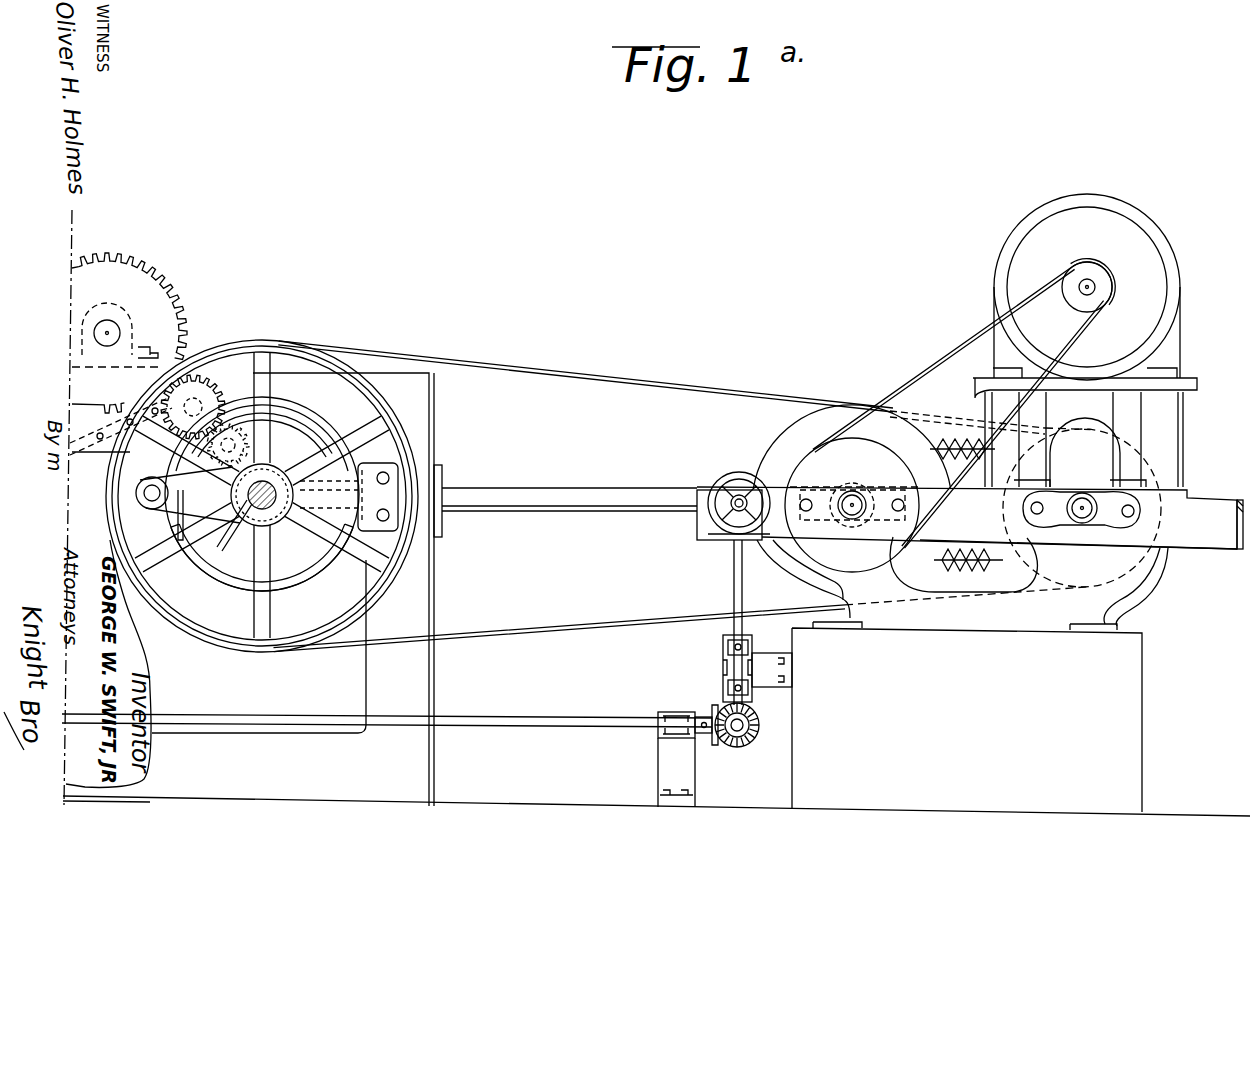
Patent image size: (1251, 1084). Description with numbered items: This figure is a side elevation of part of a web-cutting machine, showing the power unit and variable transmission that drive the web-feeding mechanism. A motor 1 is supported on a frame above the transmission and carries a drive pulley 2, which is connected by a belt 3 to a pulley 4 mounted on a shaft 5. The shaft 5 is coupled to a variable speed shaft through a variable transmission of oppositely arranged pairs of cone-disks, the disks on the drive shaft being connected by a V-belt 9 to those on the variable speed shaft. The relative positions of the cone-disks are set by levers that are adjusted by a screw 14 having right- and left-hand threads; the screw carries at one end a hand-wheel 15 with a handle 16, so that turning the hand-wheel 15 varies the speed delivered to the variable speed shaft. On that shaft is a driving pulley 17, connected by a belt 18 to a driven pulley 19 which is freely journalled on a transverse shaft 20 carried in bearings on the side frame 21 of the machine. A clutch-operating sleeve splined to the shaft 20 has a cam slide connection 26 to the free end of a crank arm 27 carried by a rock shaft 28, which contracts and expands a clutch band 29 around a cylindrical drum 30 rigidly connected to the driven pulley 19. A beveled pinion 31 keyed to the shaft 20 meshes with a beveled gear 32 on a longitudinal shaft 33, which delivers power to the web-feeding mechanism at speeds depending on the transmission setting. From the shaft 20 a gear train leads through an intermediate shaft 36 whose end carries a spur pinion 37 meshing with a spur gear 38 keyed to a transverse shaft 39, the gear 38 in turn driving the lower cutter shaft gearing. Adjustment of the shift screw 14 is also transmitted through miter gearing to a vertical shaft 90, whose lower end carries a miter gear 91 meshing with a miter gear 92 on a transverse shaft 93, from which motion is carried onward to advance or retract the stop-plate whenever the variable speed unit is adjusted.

The motor 1 is at (1127, 240).
The drive pulley 2 is at (1076, 307).
The belt 3 is at (923, 370).
The pulley 4 is at (868, 456).
The shaft 5 is at (837, 488).
The V-belt 9 is at (958, 578).
The screw 14 is at (737, 497).
The hand-wheel 15 is at (730, 533).
The handle 16 is at (695, 530).
The driving pulley 17 is at (1016, 475).
The belt 18 is at (656, 357).
The driven pulley 19 is at (374, 600).
The transverse shaft 20 is at (260, 514).
The side frame 21 is at (436, 418).
The cam slide connection 26 is at (243, 525).
The crank arm 27 is at (176, 527).
The rock shaft 28 is at (150, 502).
The clutch band 29 is at (325, 417).
The cylindrical drum 30 is at (290, 413).
The beveled pinion 31 is at (233, 590).
The beveled gear 32 is at (290, 596).
The longitudinal shaft 33 is at (571, 512).
The intermediate shaft 36 is at (168, 395).
The spur pinion 37 is at (188, 378).
The spur gear 38 is at (139, 262).
The transverse shaft 39 is at (111, 328).
The vertical shaft 90 is at (733, 592).
The miter gear 91 is at (721, 698).
The miter gear 92 is at (734, 745).
The transverse shaft 93 is at (746, 740).